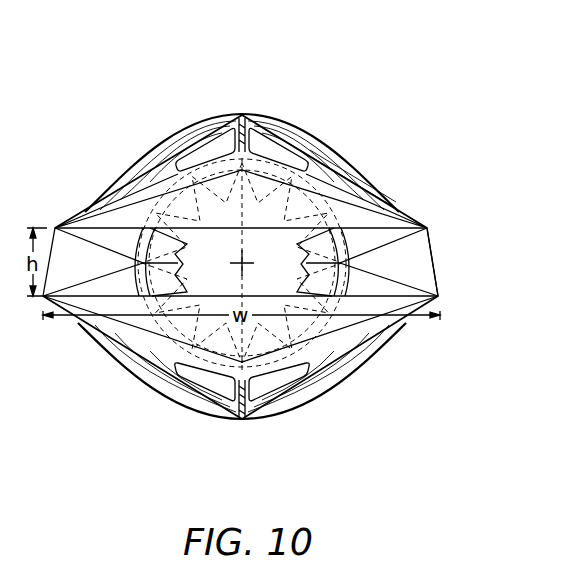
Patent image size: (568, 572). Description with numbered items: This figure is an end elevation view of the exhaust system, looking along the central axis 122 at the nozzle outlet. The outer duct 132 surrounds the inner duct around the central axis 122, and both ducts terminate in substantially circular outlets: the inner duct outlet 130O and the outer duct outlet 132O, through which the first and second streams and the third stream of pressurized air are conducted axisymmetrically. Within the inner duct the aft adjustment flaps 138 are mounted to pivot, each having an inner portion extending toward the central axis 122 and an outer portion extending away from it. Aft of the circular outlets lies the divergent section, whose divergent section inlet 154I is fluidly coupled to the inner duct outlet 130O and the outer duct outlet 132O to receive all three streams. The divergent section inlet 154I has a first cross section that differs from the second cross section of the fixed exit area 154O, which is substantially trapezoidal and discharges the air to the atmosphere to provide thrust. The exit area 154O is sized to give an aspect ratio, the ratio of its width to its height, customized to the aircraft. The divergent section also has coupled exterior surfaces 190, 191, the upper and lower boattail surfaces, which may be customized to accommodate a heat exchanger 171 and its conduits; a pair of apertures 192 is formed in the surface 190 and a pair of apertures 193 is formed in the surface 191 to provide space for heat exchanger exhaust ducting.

The central axis 122 is at (243, 266).
The outer duct 132 is at (167, 130).
The outer duct outlet 132O is at (243, 117).
The aft adjustment flaps 138 is at (278, 248).
The divergent section inlet 154I is at (313, 164).
The exit area 154O is at (437, 248).
The heat exchanger 171 is at (103, 202).
The exterior surface 190 is at (317, 168).
The exterior surface 191 is at (312, 361).
The apertures 192 is at (263, 148).
The apertures 193 is at (213, 388).
The inner duct outlet 130O is at (307, 213).